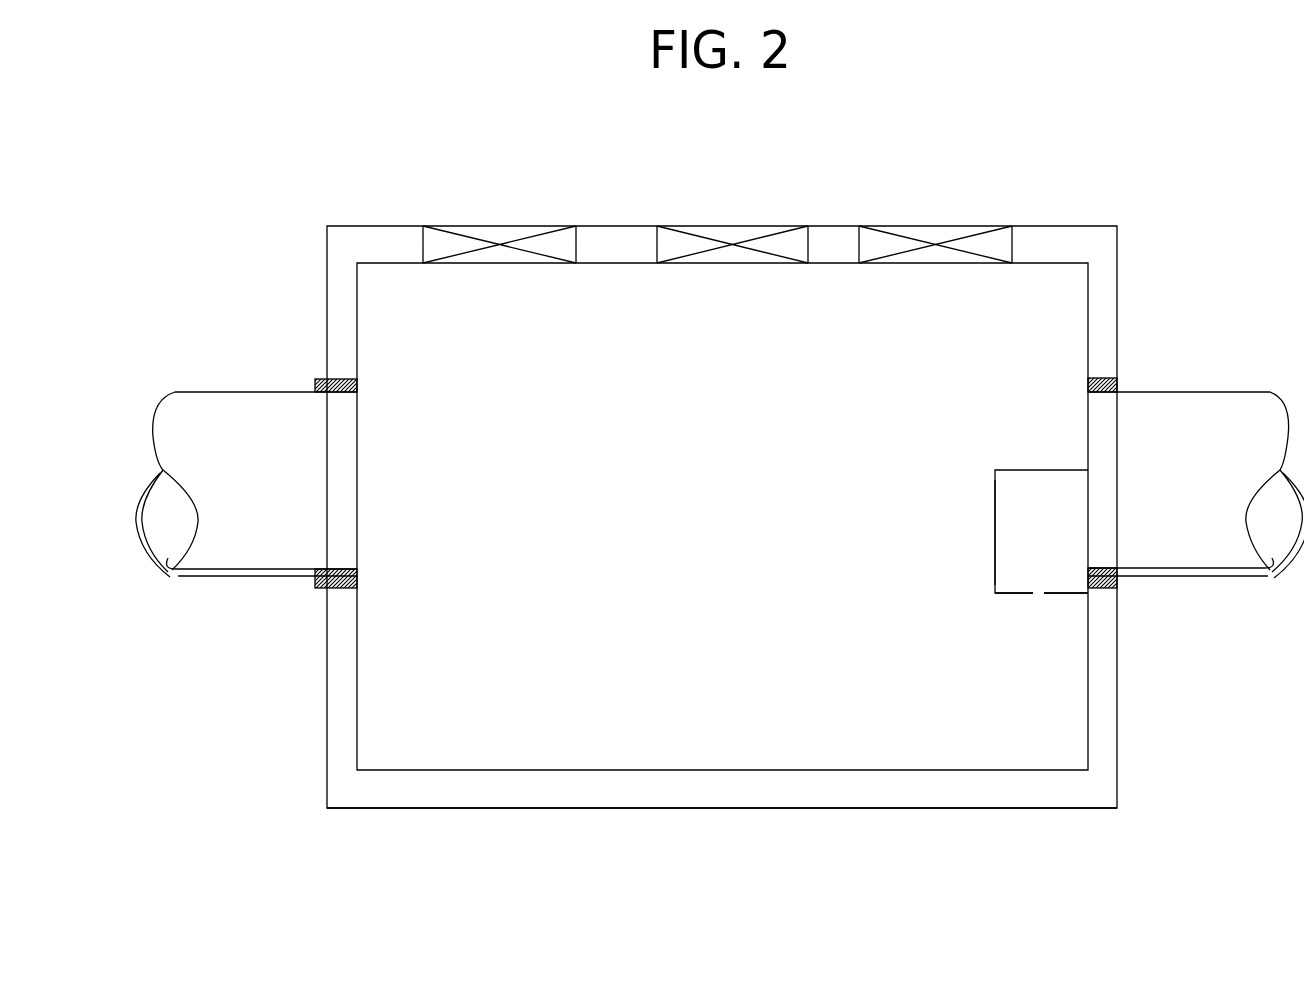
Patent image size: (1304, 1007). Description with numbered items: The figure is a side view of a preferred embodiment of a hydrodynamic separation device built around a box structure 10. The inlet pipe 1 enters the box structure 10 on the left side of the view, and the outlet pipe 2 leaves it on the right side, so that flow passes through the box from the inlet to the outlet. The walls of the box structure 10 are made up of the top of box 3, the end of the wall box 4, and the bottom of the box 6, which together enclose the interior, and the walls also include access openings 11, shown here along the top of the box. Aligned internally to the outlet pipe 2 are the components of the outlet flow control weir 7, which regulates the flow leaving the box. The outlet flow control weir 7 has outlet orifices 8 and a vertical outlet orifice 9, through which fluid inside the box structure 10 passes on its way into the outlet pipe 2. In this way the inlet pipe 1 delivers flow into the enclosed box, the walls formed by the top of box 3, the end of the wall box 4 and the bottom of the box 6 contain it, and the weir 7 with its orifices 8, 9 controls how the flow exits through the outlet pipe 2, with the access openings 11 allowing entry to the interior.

The inlet pipe 1 is at (244, 407).
The outlet pipe 2 is at (1188, 402).
The top of box 3 is at (612, 242).
The end of the wall box 4 is at (330, 670).
The bottom of the box 6 is at (1037, 784).
The outlet flow control weir 7 is at (1032, 495).
The outlet orifices 8 is at (988, 523).
The vertical outlet orifice 9 is at (1050, 594).
The box structure 10 is at (1117, 818).
The access openings 11 is at (930, 227).